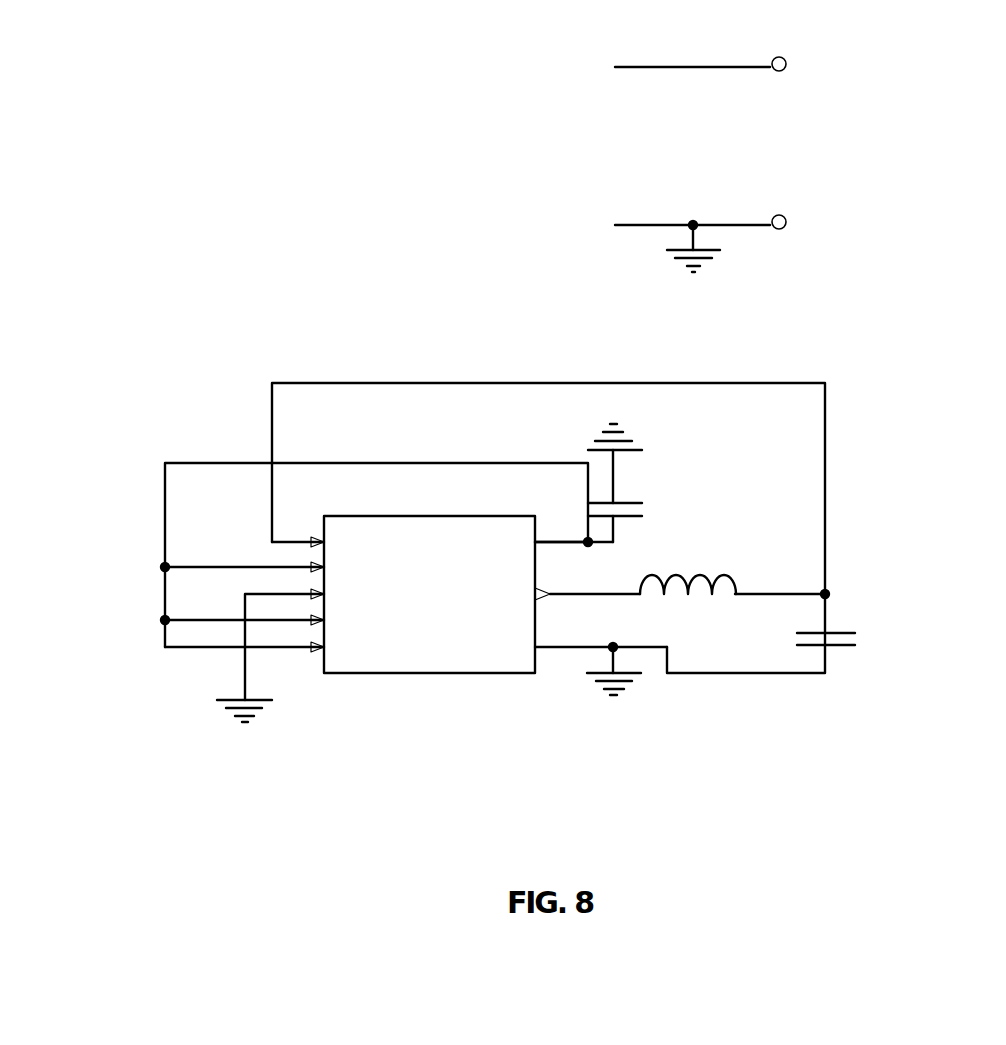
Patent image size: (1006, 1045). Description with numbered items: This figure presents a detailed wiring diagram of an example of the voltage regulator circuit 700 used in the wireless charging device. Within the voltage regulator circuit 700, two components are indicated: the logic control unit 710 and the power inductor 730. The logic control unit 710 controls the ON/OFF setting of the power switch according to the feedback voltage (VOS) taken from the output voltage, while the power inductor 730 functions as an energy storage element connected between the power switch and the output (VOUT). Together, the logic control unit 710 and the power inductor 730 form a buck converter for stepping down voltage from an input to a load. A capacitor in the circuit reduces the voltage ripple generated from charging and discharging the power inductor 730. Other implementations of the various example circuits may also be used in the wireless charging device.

The voltage regulator circuit 700 is at (505, 397).
The logic control unit 710 is at (435, 557).
The power inductor 730 is at (727, 580).